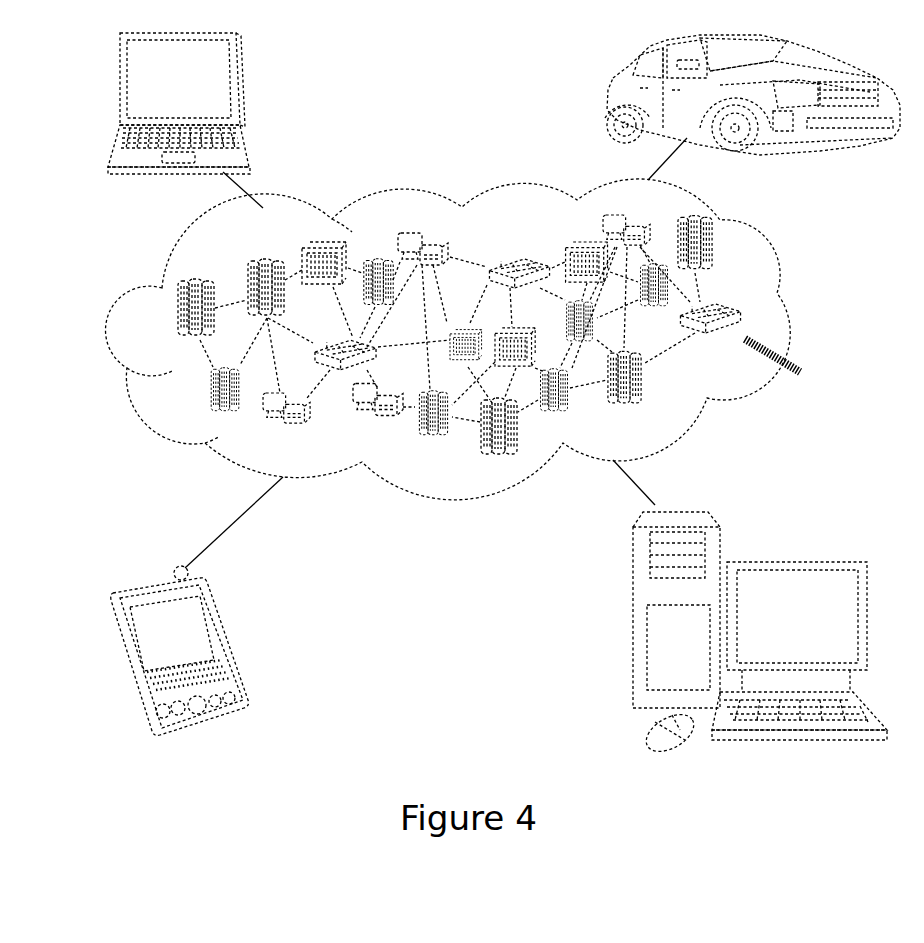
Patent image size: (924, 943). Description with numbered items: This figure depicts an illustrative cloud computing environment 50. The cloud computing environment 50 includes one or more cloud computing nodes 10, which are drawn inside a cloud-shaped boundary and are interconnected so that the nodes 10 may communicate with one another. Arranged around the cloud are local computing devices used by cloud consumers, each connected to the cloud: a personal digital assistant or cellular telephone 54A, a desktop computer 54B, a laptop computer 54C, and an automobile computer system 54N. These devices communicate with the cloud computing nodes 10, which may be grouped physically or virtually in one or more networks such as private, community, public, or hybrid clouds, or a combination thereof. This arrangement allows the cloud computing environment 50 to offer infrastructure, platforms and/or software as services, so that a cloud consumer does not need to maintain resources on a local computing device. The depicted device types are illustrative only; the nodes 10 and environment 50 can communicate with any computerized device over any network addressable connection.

The cloud computing node 10 is at (756, 343).
The cloud computing environment 50 is at (795, 313).
The personal digital assistant (PDA) or cellular telephone 54A is at (231, 636).
The desktop computer 54B is at (797, 562).
The laptop computer 54C is at (243, 84).
The automobile computer system 54N is at (608, 97).